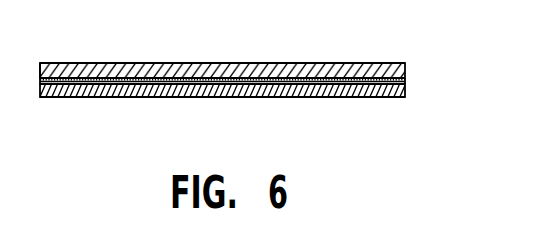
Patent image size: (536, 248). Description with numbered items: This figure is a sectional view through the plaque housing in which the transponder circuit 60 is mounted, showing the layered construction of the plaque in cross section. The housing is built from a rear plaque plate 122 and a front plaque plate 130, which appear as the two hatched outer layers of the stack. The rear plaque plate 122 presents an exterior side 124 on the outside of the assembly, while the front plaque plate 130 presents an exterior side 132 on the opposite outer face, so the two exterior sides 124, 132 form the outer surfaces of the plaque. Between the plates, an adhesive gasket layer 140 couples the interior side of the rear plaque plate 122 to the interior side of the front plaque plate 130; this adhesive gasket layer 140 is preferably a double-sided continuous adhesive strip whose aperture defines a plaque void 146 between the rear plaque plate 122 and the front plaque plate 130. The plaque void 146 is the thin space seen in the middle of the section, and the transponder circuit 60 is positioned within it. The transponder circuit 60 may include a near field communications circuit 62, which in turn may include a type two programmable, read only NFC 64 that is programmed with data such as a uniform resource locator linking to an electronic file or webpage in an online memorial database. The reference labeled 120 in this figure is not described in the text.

The transponder circuit 60 is at (184, 79).
The near field communications circuit 62 is at (245, 80).
The type 2 programmable, read only NFC 64 is at (235, 81).
The first substrate 120 is at (223, 45).
The rear plaque plate 122 is at (335, 63).
The exterior side 124 is at (67, 63).
The front plaque plate 130 is at (222, 113).
The exterior side 132 is at (73, 97).
The adhesive gasket layer 140 is at (257, 77).
The plaque void 146 is at (222, 77).